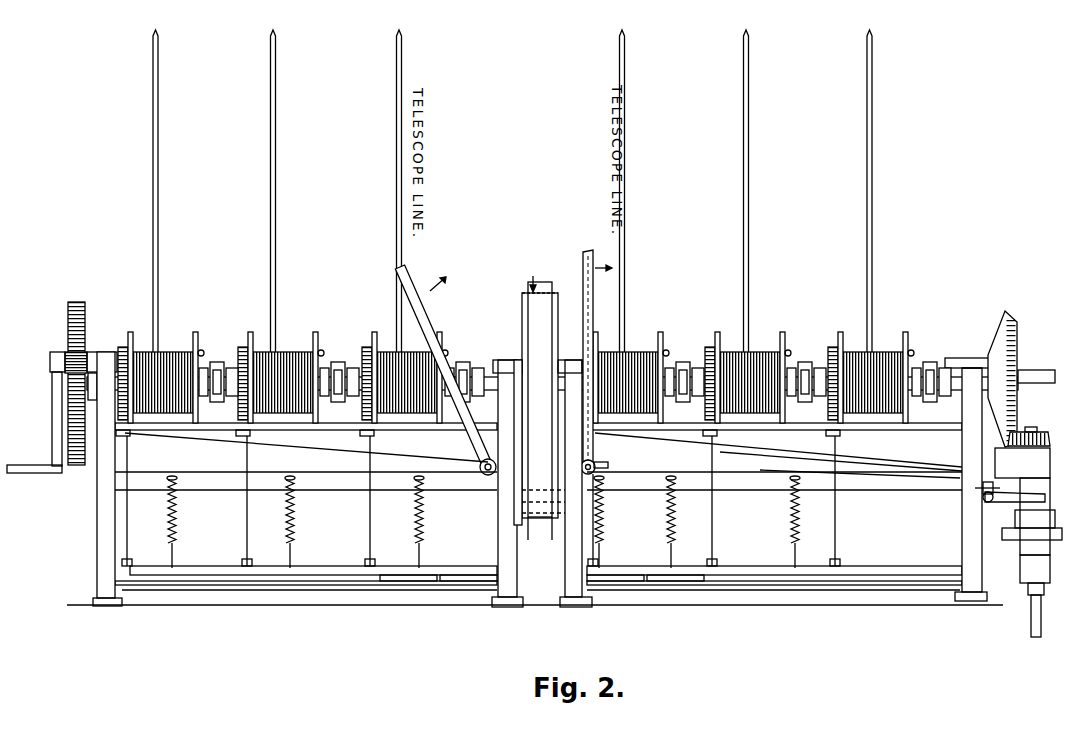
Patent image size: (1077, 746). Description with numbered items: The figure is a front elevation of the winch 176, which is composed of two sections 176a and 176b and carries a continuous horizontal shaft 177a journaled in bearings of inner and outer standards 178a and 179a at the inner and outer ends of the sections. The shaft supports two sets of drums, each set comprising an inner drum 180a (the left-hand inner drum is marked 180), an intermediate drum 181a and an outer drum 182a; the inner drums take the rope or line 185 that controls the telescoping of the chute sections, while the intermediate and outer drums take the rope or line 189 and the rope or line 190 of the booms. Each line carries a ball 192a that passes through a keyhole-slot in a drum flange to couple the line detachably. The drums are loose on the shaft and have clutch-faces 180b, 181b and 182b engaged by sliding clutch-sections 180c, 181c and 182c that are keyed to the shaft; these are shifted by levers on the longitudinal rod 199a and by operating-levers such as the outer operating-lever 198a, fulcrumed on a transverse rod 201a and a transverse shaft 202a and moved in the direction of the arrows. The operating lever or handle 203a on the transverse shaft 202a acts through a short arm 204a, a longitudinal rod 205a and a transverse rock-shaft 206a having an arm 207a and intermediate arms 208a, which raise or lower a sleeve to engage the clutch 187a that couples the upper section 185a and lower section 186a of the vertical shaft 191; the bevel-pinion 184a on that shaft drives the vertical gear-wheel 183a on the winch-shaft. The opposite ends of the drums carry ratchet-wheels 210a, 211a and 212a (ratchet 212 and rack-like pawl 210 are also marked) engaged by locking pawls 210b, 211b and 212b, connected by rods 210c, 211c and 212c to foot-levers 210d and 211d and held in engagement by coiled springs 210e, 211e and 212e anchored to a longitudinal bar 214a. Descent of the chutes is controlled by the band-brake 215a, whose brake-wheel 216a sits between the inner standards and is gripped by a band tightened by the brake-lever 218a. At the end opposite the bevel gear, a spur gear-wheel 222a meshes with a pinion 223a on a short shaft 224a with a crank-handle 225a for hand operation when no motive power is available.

The winch 176 is at (528, 310).
The winch section 176a is at (882, 303).
The winch section 176b is at (412, 361).
The horizontal shaft 177a is at (68, 384).
The inner standards 178a is at (517, 580).
The outer standards 179a is at (97, 548).
The inner drum 180 is at (380, 348).
The inner drum 180a is at (622, 348).
The clutch-face 180b is at (440, 425).
The sliding clutch-section 180c is at (456, 366).
The intermediate drum 181a is at (310, 345).
The clutch-face 181b is at (316, 425).
The sliding clutch-section 181c is at (326, 368).
The outer drum 182a is at (192, 348).
The clutch-face 182b is at (196, 425).
The sliding clutch-section 182c is at (205, 368).
The vertical gear-wheel 183a is at (1012, 322).
The bevel-pinion 184a is at (1043, 428).
The rope or line 185 is at (403, 196).
The upper section of vertical shaft 185a is at (1022, 501).
The lower section of vertical shaft 186a is at (1028, 590).
The clutch 187a is at (1020, 568).
The rope or line 189 is at (277, 200).
The rope or line 190 is at (159, 192).
The vertical shaft 191 is at (1031, 633).
The ball 192a is at (203, 350).
The outer operating-lever 198a is at (436, 274).
The longitudinal rod 199a is at (300, 452).
The transverse rod 201a is at (483, 473).
The transverse shaft 202a is at (595, 472).
The operating lever or handle 203a is at (586, 252).
The short arm 204a is at (603, 462).
The longitudinal rod 205a is at (762, 471).
The transverse rock-shaft 206a is at (983, 500).
The arm 207a is at (983, 488).
The intermediate arms 208a is at (1002, 534).
The rack 210 is at (594, 300).
The ratchet-wheel 210a is at (366, 345).
The locking pawl or lever 210b is at (373, 436).
The rod 210c is at (368, 560).
The foot-lever 210d is at (470, 590).
The coiled spring 210e is at (422, 535).
The ratchet-wheel 211a is at (243, 345).
The locking pawl or lever 211b is at (249, 436).
The rod 211c is at (714, 548).
The foot-lever 211d is at (420, 590).
The coiled spring 211e is at (295, 518).
The rack 212 is at (833, 345).
The ratchet-wheel 212a is at (123, 345).
The locking pawl or lever 212b is at (130, 434).
The rod 212c is at (138, 551).
The coiled spring 212e is at (178, 516).
The longitudinal bar 214a is at (328, 480).
The band-brake 215a is at (524, 276).
The brake-wheel 216a is at (522, 300).
The brake-lever 218a is at (516, 500).
The spur gear-wheel 222a is at (76, 468).
The pinion 223a is at (66, 353).
The short shaft 224a is at (50, 358).
The crank-handle 225a is at (54, 445).